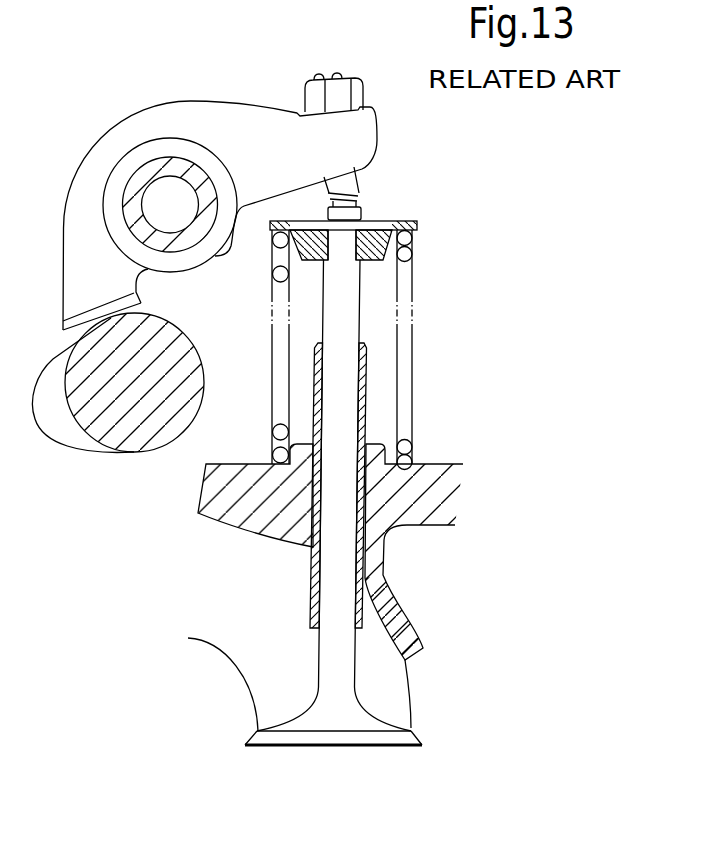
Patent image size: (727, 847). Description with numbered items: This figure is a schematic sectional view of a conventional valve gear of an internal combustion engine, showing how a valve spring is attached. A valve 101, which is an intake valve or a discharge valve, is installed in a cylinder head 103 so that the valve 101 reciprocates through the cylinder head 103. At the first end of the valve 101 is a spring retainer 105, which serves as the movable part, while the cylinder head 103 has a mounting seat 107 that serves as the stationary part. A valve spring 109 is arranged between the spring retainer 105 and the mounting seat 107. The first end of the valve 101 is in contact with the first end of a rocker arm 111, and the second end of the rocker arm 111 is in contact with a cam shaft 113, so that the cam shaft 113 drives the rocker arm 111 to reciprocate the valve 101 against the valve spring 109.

The valve 101 is at (335, 703).
The cylinder head 103 is at (442, 508).
The spring retainer 105 is at (385, 235).
The mounting seat 107 is at (448, 465).
The valve spring 109 is at (412, 293).
The rocker arm 111 is at (183, 104).
The cam shaft 113 is at (127, 433).